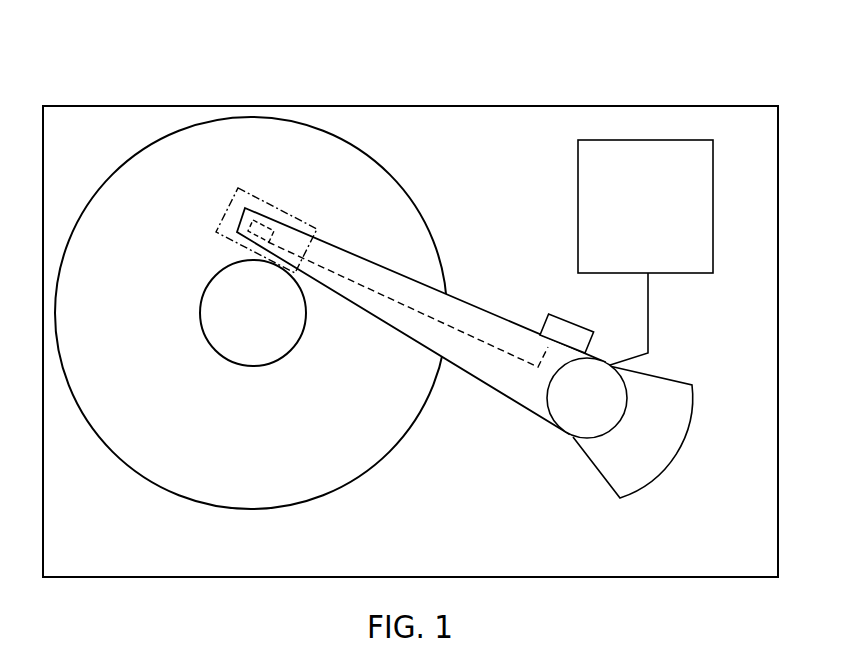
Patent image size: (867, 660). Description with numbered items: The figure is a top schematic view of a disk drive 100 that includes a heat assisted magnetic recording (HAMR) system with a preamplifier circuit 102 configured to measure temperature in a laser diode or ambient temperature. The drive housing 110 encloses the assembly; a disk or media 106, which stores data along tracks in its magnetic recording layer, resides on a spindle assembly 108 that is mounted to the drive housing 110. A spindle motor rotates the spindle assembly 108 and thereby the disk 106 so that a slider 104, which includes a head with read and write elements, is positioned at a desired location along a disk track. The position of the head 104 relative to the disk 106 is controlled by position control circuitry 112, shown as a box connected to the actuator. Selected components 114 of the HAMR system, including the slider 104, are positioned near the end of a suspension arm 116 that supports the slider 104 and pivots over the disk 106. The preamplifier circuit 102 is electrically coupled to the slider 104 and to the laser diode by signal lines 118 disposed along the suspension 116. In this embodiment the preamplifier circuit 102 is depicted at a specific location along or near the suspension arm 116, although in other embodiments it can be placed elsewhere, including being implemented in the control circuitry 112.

The disk drive 100 is at (168, 80).
The preamplifier circuit 102 is at (563, 316).
The slider 104 is at (270, 222).
The disk/media 106 is at (372, 155).
The spindle assembly 108 is at (253, 313).
The drive housing 110 is at (516, 105).
The position control circuitry 112 is at (645, 253).
The selected components of the HAMR system 114 is at (259, 200).
The suspension arm 116 is at (478, 378).
The signal lines 118 is at (463, 330).